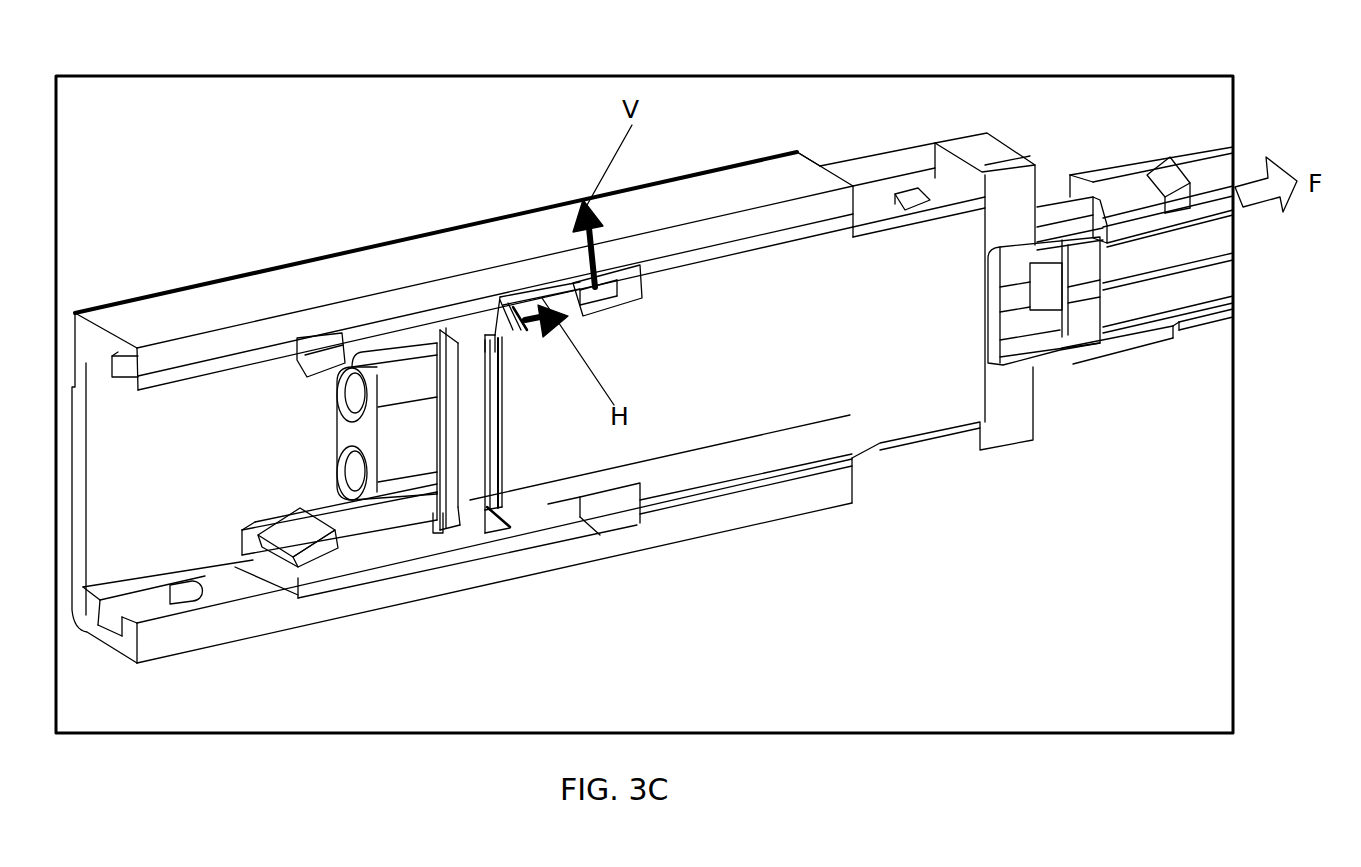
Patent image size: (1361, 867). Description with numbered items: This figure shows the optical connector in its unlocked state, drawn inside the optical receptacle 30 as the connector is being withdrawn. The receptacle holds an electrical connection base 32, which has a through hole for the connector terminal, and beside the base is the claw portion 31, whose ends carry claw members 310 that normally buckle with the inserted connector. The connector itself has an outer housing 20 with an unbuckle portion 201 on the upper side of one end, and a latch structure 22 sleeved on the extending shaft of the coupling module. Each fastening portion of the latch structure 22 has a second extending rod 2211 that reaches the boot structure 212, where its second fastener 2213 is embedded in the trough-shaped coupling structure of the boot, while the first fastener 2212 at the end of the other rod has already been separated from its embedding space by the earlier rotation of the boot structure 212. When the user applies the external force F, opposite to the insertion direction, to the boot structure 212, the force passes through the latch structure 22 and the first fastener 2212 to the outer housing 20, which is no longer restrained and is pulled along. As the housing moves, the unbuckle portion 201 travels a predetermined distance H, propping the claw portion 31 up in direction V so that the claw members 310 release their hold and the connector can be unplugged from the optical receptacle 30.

The outer housing 20 is at (1008, 145).
The latch structure 22 is at (1035, 285).
The optical receptacle 30 is at (790, 166).
The claw portion 31 is at (430, 310).
The electrical connection base 32 is at (330, 437).
The unbuckle portion 201 is at (550, 305).
The boot structure 212 is at (1192, 325).
The claw member 310 is at (592, 290).
The second extending rod 2211 is at (1115, 175).
The first fastener 2212 is at (907, 195).
The second fastener 2213 is at (1172, 178).